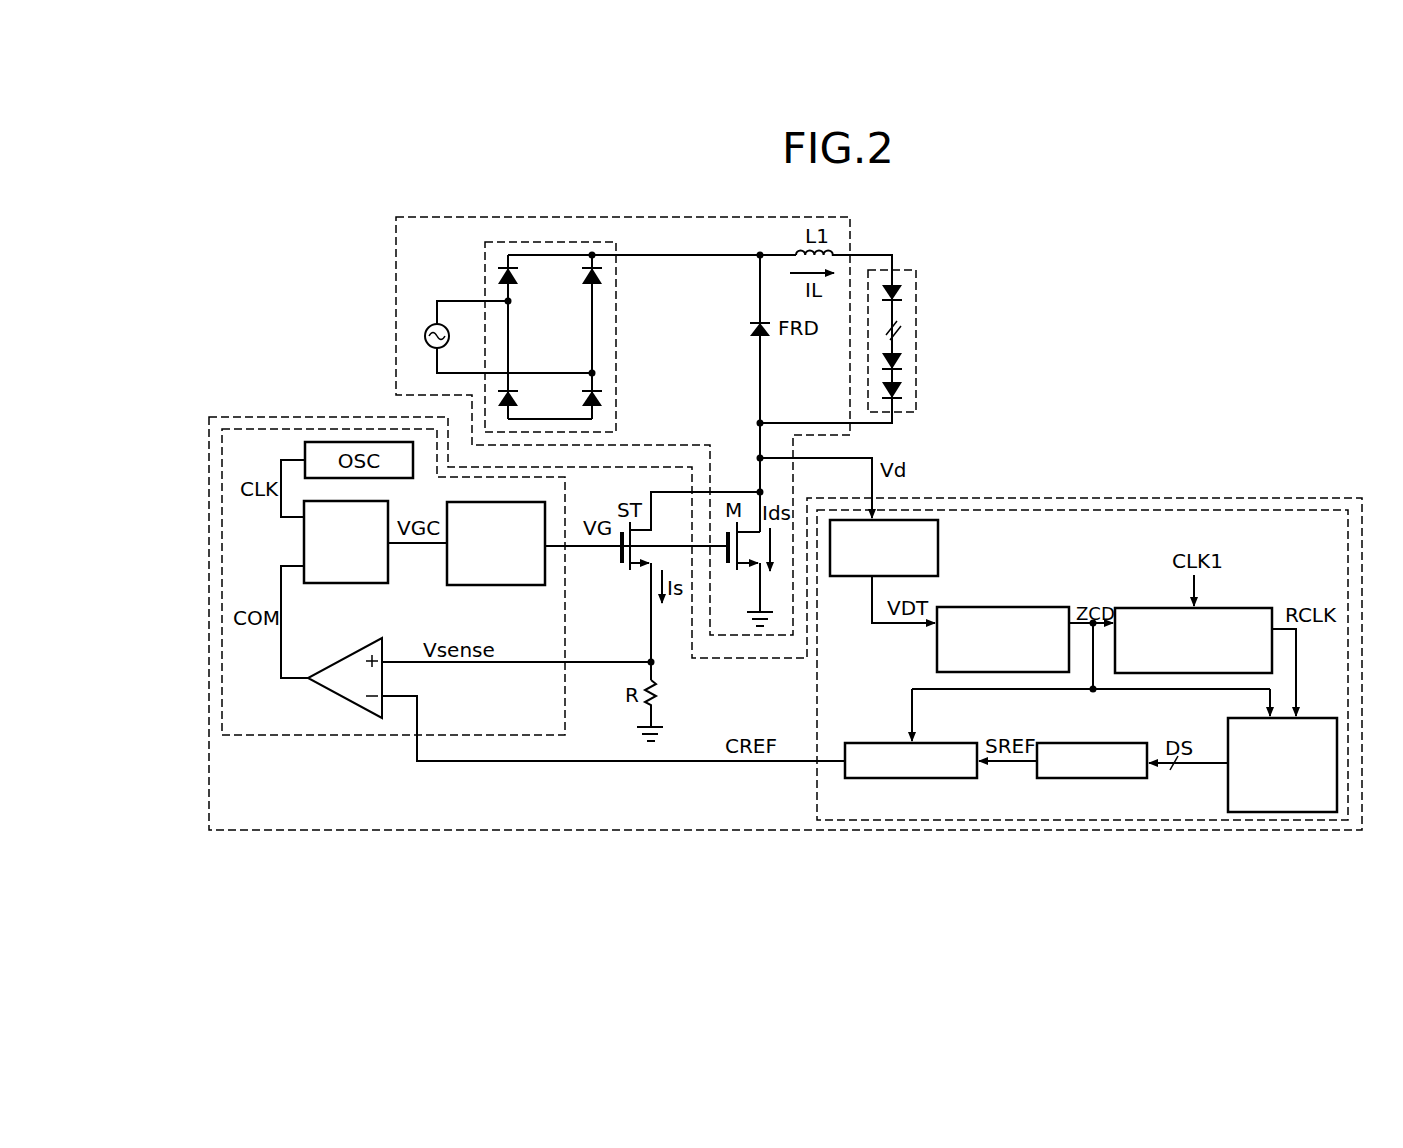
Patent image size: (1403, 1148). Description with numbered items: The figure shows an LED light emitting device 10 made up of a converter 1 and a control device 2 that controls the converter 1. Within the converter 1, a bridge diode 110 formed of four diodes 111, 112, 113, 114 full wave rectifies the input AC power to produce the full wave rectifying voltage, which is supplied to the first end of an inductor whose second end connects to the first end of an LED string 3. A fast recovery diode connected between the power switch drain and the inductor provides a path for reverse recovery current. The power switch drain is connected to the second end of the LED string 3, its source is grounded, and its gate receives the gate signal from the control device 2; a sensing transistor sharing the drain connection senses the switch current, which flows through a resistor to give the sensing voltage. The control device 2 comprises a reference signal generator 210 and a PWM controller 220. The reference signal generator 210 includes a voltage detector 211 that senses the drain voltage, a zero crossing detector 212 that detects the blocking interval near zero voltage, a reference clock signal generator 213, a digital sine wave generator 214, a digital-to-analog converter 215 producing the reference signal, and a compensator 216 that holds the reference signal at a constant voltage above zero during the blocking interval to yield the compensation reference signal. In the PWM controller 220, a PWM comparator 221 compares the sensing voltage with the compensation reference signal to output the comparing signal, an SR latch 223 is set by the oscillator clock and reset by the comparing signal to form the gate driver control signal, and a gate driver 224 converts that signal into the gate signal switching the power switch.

The converter 1 is at (396, 271).
The control device 2 is at (1072, 497).
The LED string 3 is at (917, 342).
The LED light emitting device 10 is at (1157, 306).
The bridge diode 110 is at (617, 336).
The diode 111 is at (518, 269).
The diode 112 is at (604, 271).
The diode 113 is at (518, 392).
The diode 114 is at (604, 393).
The reference signal generator 210 is at (1232, 510).
The voltage detector 211 is at (938, 545).
The zero crossing detector 212 is at (1010, 607).
The reference clock signal generator 213 is at (1243, 608).
The digital sine wave generator 214 is at (1315, 718).
The digital-to-analog converter 215 is at (1093, 743).
The compensator 216 is at (938, 743).
The PWM controller 220 is at (345, 736).
The PWM comparator 221 is at (345, 700).
The SR latch 223 is at (346, 586).
The gate driver 224 is at (497, 586).